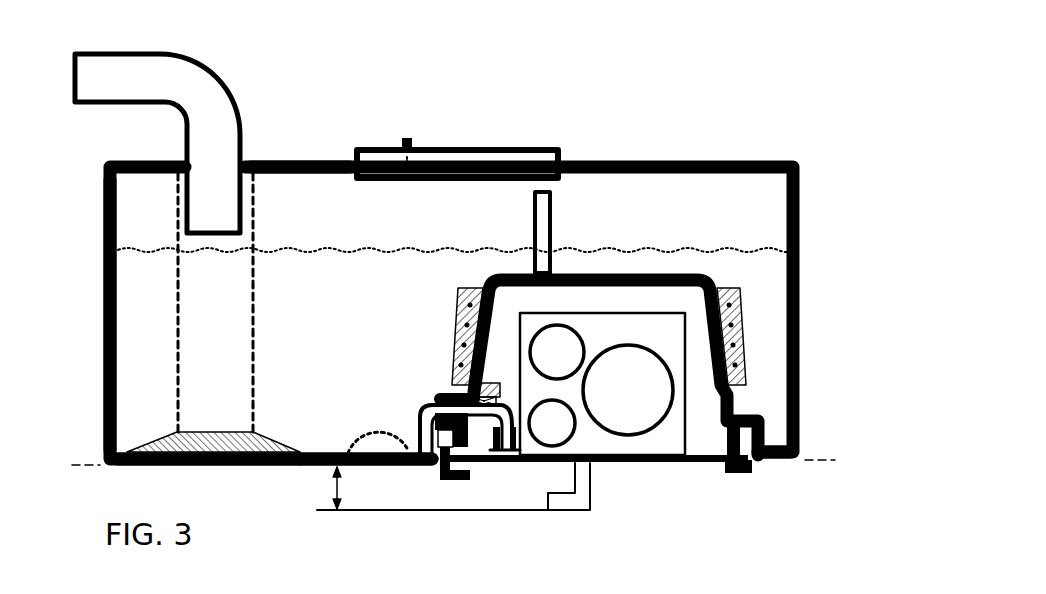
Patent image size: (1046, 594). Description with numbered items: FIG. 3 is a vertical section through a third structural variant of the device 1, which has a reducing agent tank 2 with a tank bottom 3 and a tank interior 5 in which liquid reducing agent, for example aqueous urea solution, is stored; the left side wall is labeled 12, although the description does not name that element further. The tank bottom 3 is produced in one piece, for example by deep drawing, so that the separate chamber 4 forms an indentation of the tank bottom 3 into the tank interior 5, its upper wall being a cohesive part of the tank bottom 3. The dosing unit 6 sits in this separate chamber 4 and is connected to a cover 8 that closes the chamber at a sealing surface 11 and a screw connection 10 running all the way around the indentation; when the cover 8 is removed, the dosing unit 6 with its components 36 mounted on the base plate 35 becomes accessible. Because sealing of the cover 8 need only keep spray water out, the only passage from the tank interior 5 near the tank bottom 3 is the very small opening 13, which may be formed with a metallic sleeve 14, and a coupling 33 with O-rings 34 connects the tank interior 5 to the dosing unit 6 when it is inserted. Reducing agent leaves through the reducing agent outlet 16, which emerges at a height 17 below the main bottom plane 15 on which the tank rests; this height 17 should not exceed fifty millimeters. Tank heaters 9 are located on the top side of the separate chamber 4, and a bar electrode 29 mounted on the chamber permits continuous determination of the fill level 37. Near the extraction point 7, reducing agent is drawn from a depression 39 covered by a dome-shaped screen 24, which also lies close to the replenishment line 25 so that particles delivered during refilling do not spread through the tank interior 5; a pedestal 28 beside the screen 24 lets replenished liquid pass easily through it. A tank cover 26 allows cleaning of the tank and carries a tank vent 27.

The device 1 is at (818, 82).
The reducing agent tank 2 is at (806, 189).
The tank bottom 3 is at (773, 463).
The separate chamber 4 is at (668, 276).
The tank interior 5 is at (297, 193).
The dosing unit 6 is at (626, 455).
The extraction point 7 is at (380, 452).
The cover 8 is at (694, 463).
The tank heater 9 is at (736, 290).
The screw connection 10 is at (421, 466).
The sealing surface 11 is at (468, 448).
The tank wall 12 is at (104, 302).
The opening 13 is at (470, 401).
The metallic sleeve 14 is at (478, 396).
The main bottom plane 15 is at (92, 463).
The reducing agent outlet 16 is at (594, 505).
The height 17 is at (333, 486).
The screen 24 is at (178, 212).
The replenishment line 25 is at (228, 90).
The tank cover 26 is at (560, 150).
The tank vent 27 is at (408, 138).
The pedestal 28 is at (222, 432).
The bar electrode 29 is at (533, 221).
The coupling 33 is at (515, 468).
The O-rings 34 is at (530, 468).
The base plate 35 is at (688, 422).
The components 36 is at (576, 436).
The fill level 37 is at (318, 252).
The depression 39 is at (360, 470).